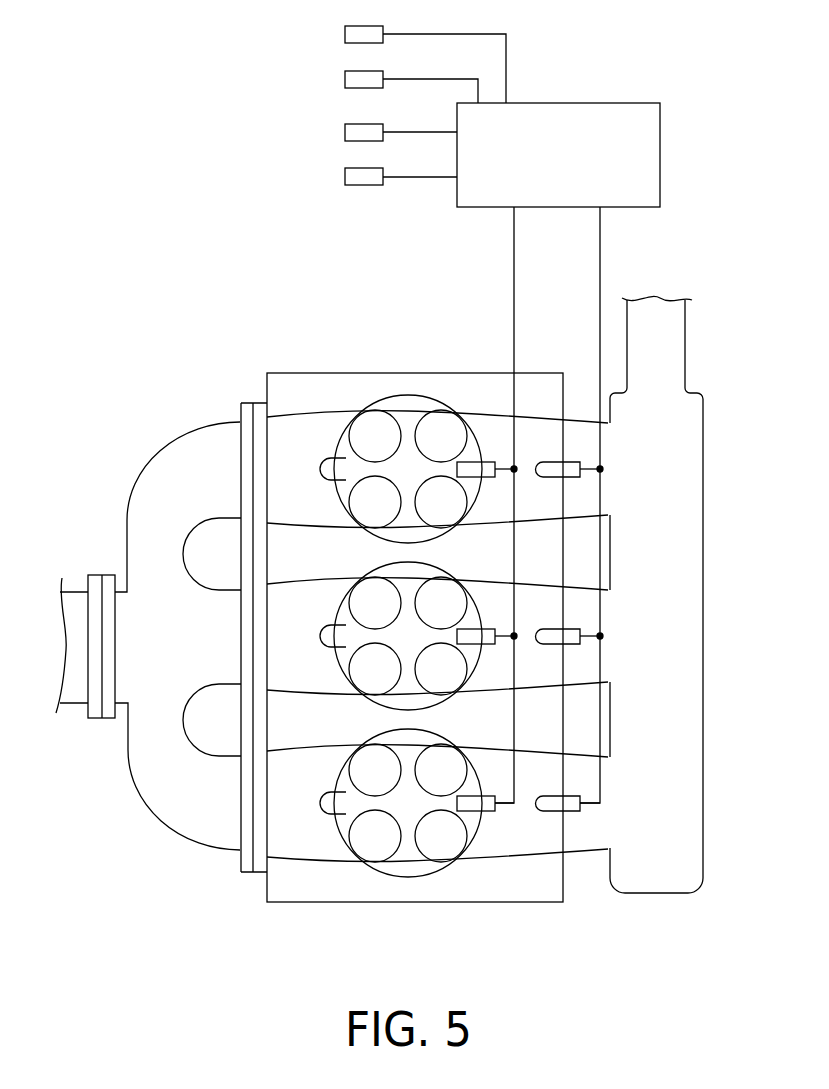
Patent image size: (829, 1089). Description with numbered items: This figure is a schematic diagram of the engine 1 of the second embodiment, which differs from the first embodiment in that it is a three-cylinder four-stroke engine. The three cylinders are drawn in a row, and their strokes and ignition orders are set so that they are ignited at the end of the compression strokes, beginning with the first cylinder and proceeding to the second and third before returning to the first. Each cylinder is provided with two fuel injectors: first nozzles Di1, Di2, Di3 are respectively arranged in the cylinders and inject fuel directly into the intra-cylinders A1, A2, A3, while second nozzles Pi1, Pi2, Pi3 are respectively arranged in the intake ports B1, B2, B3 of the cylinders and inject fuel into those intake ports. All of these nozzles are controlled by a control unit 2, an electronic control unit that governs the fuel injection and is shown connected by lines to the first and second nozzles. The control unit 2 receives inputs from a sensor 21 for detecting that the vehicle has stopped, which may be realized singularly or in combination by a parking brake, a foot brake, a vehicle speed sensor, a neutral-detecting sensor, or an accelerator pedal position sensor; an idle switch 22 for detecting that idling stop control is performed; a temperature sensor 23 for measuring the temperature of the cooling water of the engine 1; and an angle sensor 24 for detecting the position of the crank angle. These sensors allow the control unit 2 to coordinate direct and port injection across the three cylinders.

The engine 1 is at (714, 209).
The control unit 2 is at (626, 103).
The sensor for detecting that the vehicle has stopped 21 is at (343, 33).
The idle switch 22 is at (343, 78).
The temperature sensor 23 is at (343, 131).
The angle sensor 24 is at (343, 176).
The intra-cylinder A1 is at (411, 423).
The intake port B1 is at (533, 455).
The first nozzle Di1 is at (490, 478).
The second nozzle Pi1 is at (577, 462).
The intra-cylinder A2 is at (411, 590).
The intake port B2 is at (533, 622).
The first nozzle Di2 is at (490, 645).
The second nozzle Pi2 is at (577, 629).
The intra-cylinder A3 is at (411, 757).
The intake port B3 is at (533, 789).
The first nozzle Di3 is at (490, 812).
The second nozzle Pi3 is at (577, 796).